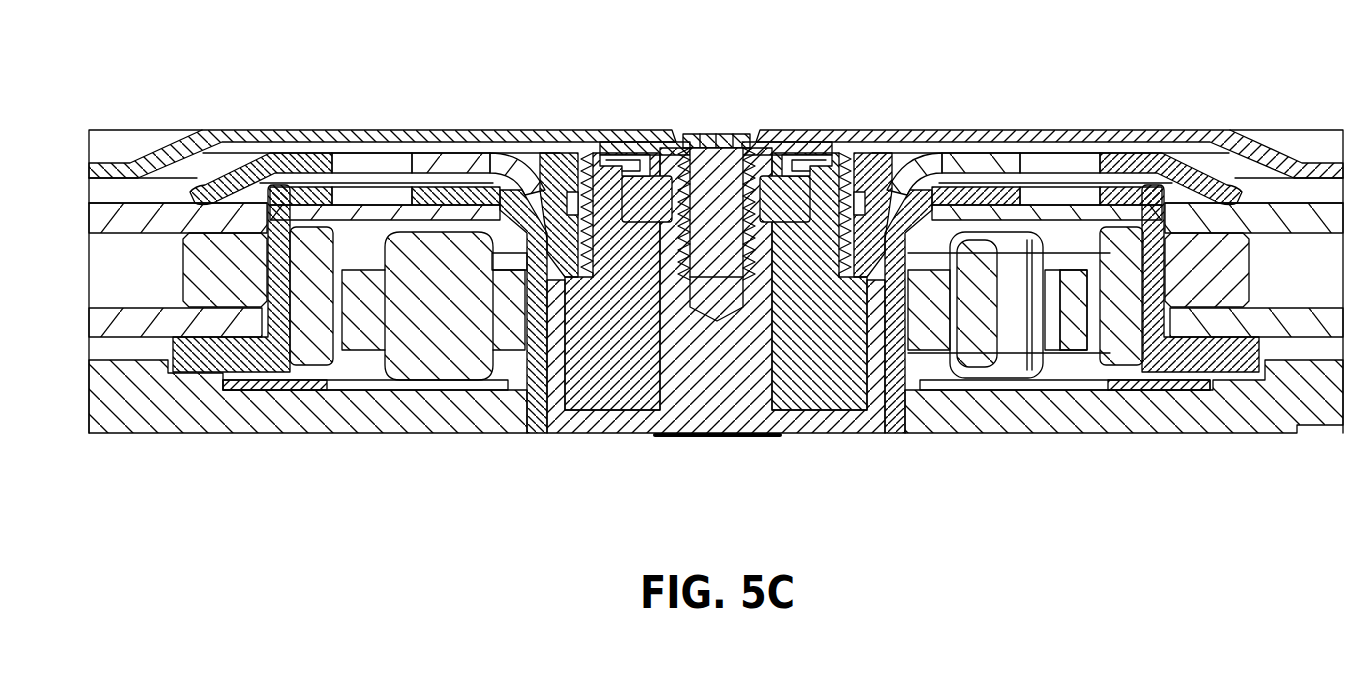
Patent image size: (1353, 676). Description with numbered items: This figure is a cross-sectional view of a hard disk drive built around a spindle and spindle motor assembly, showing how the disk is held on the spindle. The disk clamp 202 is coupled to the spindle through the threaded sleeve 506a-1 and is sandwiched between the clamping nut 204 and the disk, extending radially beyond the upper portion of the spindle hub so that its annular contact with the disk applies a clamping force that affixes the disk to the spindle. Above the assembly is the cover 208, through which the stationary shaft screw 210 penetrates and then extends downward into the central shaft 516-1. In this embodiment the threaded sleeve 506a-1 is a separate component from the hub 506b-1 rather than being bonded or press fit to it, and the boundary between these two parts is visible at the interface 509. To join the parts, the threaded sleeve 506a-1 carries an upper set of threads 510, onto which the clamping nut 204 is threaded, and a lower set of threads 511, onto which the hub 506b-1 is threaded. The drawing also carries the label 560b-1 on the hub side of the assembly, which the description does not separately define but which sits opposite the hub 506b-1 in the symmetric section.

The disk clamp 202 is at (1170, 167).
The clamping nut 204 is at (557, 155).
The cover 208 is at (218, 129).
The stationary shaft screw 210 is at (707, 170).
The threaded sleeve 506a-1 is at (612, 176).
The hub 506b-1 is at (993, 188).
The interface 509 is at (580, 243).
The upper set of threads 510 is at (605, 186).
The lower set of threads 511 is at (560, 215).
The central shaft 516-1 is at (725, 347).
The spring clip 560b-1 is at (307, 190).